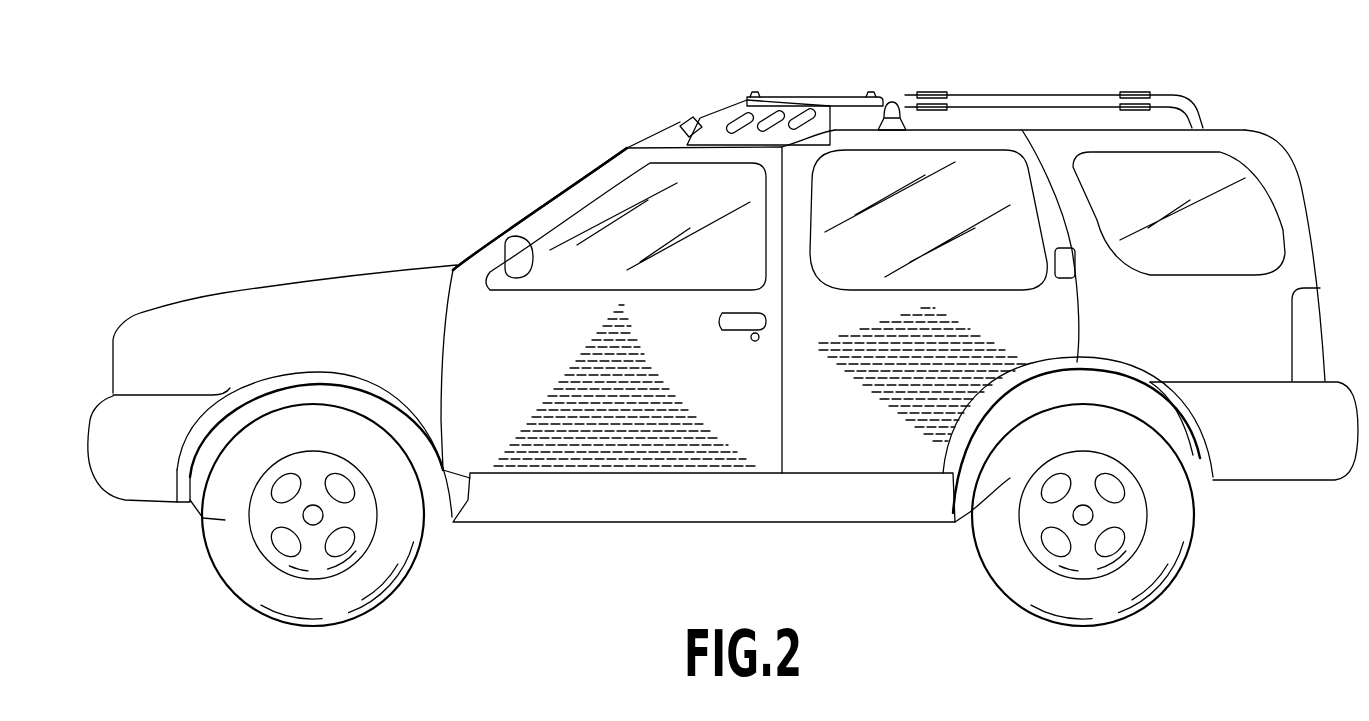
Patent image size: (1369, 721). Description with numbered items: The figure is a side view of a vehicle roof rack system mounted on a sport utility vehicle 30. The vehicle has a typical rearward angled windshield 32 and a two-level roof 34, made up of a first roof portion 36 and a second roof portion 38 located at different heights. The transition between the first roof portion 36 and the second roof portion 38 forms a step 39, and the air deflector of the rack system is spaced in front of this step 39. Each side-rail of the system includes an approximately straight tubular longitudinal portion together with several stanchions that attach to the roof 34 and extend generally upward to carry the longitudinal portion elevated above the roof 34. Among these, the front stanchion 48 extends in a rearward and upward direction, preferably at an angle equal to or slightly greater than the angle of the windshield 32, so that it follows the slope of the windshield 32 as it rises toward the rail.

The sport utility vehicle 30 is at (728, 384).
The windshield 32 is at (485, 240).
The roof 34 is at (1090, 130).
The first roof portion 36 is at (717, 145).
The second roof portion 38 is at (1037, 130).
The step 39 is at (830, 132).
The front stanchion 48 is at (690, 120).